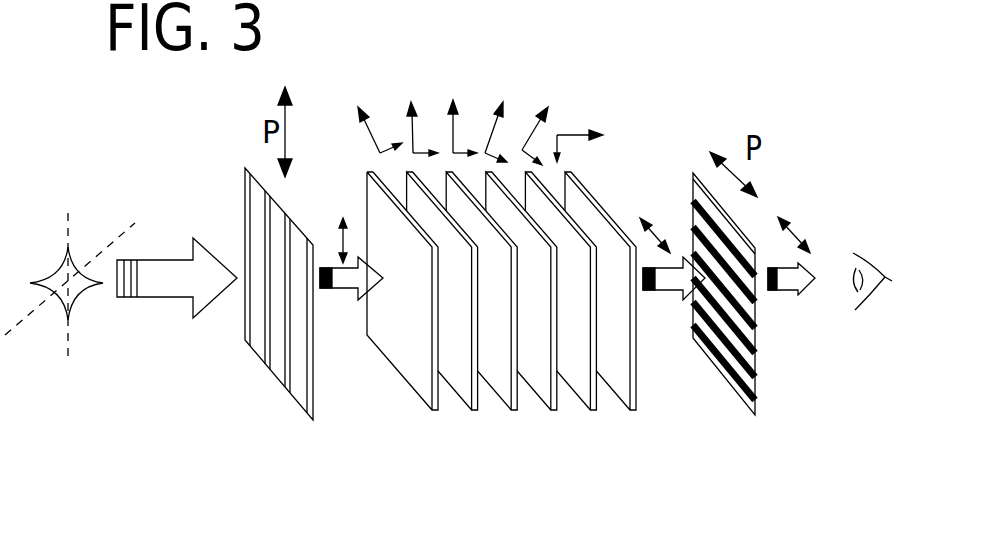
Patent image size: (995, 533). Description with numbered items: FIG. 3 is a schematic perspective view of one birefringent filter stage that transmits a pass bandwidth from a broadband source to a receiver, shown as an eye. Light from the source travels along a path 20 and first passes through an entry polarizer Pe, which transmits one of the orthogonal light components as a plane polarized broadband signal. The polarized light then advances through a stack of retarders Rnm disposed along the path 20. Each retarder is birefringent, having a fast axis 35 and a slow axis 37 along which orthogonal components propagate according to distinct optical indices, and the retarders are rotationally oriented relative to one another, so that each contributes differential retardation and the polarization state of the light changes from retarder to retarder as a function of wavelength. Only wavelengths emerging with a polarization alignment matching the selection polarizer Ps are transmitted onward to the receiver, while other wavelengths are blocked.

The path of the light signal 20 is at (175, 282).
The fast axis 35 is at (373, 117).
The slow axis 37 is at (522, 150).
The entry polarizer Pe is at (262, 347).
The selection polarizer Ps is at (723, 347).
The retarders Rnm is at (502, 408).